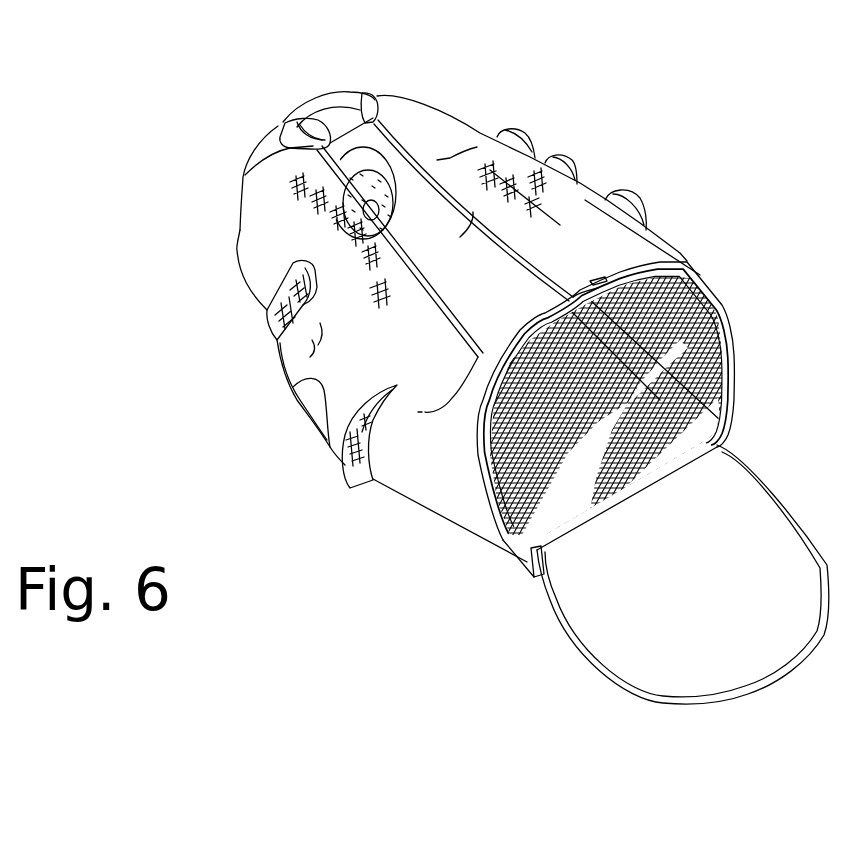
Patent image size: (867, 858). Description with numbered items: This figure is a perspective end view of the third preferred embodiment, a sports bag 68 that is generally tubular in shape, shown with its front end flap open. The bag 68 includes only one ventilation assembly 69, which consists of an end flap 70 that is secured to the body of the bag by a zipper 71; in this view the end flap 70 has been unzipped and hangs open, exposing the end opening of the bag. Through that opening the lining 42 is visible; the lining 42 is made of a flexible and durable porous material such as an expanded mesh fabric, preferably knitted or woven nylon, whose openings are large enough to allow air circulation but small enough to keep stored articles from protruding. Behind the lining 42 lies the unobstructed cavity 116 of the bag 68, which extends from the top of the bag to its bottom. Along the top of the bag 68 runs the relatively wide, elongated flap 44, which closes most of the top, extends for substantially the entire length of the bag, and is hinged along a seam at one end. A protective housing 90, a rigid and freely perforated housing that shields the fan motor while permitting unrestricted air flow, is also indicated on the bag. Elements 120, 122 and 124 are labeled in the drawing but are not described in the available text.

The bag 68 is at (204, 321).
The flap 44 is at (328, 106).
The protective housing 90 is at (372, 165).
The cavity 116 is at (475, 225).
The strap loop 120 is at (627, 200).
The end panel 124 is at (713, 204).
The side tab 122 is at (308, 378).
The ventilation assembly 69 is at (738, 394).
The lining 42 is at (540, 580).
The end flap 70 is at (607, 647).
The zipper 71 is at (670, 703).